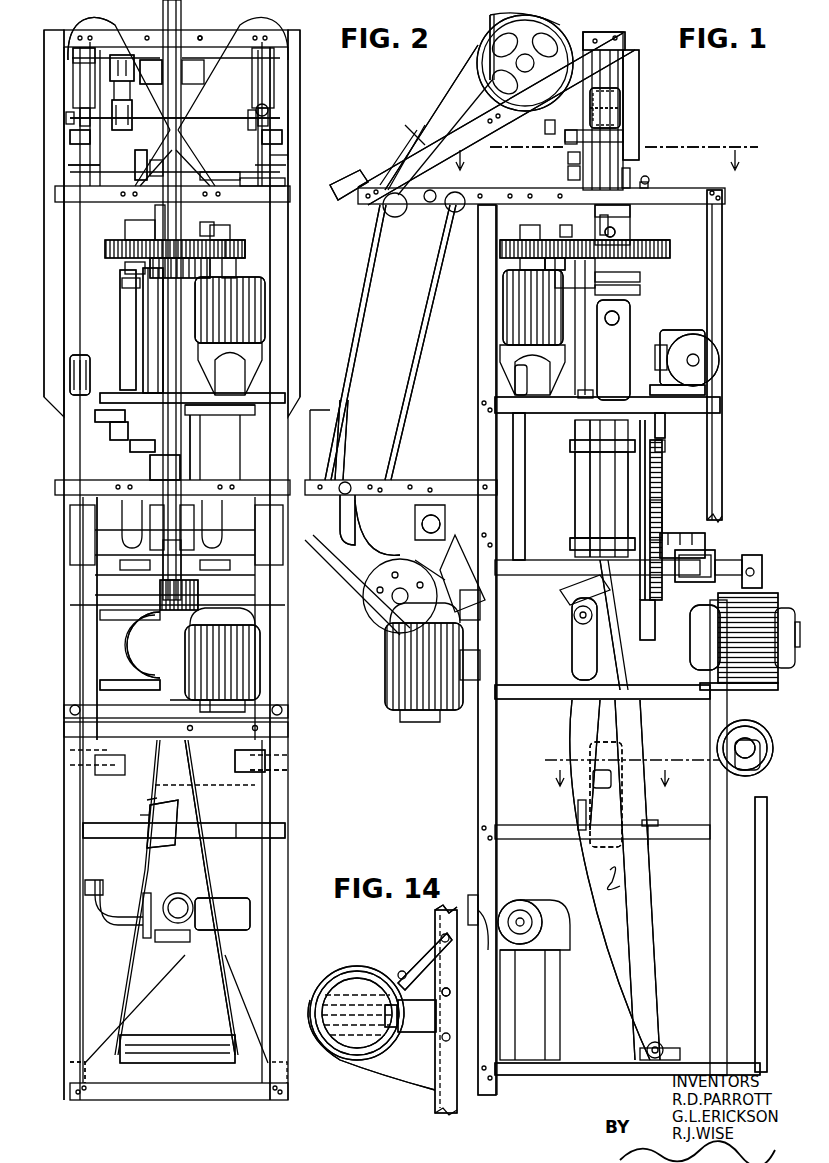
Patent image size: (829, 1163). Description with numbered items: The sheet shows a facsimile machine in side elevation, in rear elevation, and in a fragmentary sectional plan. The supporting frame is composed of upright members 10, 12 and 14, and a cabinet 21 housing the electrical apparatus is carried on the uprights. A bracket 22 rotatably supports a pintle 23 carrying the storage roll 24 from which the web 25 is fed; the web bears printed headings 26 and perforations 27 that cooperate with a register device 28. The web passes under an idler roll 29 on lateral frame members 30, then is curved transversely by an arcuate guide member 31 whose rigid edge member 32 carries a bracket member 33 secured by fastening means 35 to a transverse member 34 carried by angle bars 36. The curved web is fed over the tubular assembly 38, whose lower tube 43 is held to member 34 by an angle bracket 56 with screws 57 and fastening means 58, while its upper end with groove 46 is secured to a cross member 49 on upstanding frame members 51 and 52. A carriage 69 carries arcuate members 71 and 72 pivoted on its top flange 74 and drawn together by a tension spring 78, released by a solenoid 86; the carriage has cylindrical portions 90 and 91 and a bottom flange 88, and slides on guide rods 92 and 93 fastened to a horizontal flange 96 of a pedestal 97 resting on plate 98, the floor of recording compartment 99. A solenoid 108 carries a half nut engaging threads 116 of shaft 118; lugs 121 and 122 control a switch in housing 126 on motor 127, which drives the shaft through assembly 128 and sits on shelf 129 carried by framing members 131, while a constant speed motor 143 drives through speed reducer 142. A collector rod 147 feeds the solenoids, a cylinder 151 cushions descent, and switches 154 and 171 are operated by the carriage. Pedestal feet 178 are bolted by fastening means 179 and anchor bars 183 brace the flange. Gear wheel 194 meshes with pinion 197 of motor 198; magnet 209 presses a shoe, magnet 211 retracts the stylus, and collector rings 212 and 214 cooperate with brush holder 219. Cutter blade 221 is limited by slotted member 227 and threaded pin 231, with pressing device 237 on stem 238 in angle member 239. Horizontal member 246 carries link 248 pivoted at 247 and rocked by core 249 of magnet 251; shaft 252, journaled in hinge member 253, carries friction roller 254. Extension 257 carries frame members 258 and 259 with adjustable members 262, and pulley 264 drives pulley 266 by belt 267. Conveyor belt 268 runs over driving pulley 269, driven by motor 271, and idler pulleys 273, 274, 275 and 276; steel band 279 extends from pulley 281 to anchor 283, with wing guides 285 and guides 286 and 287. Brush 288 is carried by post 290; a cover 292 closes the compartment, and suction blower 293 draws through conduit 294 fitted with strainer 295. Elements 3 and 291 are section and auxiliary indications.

In FIG. 1, the upright member 10 is at (722, 276).
In FIG. 2, the upright member 12 is at (64, 445).
In FIG. 2, the upright member 14 is at (282, 450).
In FIG. 1, the upright member 14 is at (490, 337).
In FIG. 1, the cabinet 21 is at (750, 940).
In FIG. 2, the bracket 22 is at (280, 760).
In FIG. 1, the bracket 22 is at (752, 770).
In FIG. 2, the pintle 23 is at (288, 752).
In FIG. 1, the pintle 23 is at (760, 748).
In FIG. 2, the storage roll 24 is at (225, 790).
In FIG. 1, the storage roll 24 is at (735, 722).
In FIG. 2, the web 25 is at (202, 805).
In FIG. 1, the web 25 is at (635, 950).
In FIG. 14, the web 25 is at (375, 1070).
In FIG. 1, the printed matter 26 is at (582, 770).
In FIG. 1, the perforations 27 is at (605, 875).
In FIG. 1, the register device 28 is at (567, 644).
In FIG. 2, the idler roll 29 is at (110, 1050).
In FIG. 2, the lateral frame members 30 is at (72, 1064).
In FIG. 1, the lateral frame members 30 is at (580, 1075).
In FIG. 2, the arcuate guide member 31 is at (165, 845).
In FIG. 1, the arcuate guide member 31 is at (580, 805).
In FIG. 14, the arcuate guide member 31 is at (345, 967).
In FIG. 14, the edge member 32 is at (400, 965).
In FIG. 2, the bracket member 33 is at (140, 820).
In FIG. 14, the bracket member 33 is at (430, 950).
In FIG. 2, the transverse member 34 is at (238, 838).
In FIG. 1, the transverse member 34 is at (650, 840).
In FIG. 14, the transverse member 34 is at (435, 1102).
In FIG. 2, the fastening means 35 is at (148, 805).
In FIG. 1, the fastening means 35 is at (650, 822).
In FIG. 14, the fastening means 35 is at (440, 933).
In FIG. 2, the angle bars 36 is at (72, 825).
In FIG. 1, the angle bars 36 is at (583, 34).
In FIG. 1, the tubular assembly 38 is at (622, 745).
In FIG. 14, the tubular assembly 38 is at (392, 1060).
In FIG. 14, the encircling tubular member 43 is at (392, 1040).
In FIG. 1, the groove 46 is at (565, 228).
In FIG. 2, the cross member 49 is at (200, 35).
In FIG. 2, the upstanding frame member 51 is at (300, 250).
In FIG. 1, the upstanding frame member 51 is at (640, 80).
In FIG. 2, the upstanding frame member 52 is at (47, 258).
In FIG. 14, the angle shaped bracket 56 is at (428, 1032).
In FIG. 14, the screws 57 is at (388, 1012).
In FIG. 14, the fastening means 58 is at (450, 1037).
In FIG. 1, the carriage 69 is at (578, 495).
In FIG. 1, the arcuate member 71 is at (580, 432).
In FIG. 1, the arcuate member 72 is at (575, 440).
In FIG. 2, the top flange 74 is at (222, 447).
In FIG. 2, the tension spring 78 is at (128, 440).
In FIG. 2, the solenoid 86 is at (135, 460).
In FIG. 1, the bottom flange 88 is at (578, 550).
In FIG. 1, the cylindrical portion 90 is at (588, 514).
In FIG. 1, the cylindrical portion 91 is at (578, 540).
In FIG. 2, the guide rod 92 is at (225, 432).
In FIG. 2, the guide rod 93 is at (128, 392).
In FIG. 1, the guide rod 93 is at (645, 488).
In FIG. 1, the horizontal flange 96 is at (640, 292).
In FIG. 2, the pedestal member 97 is at (143, 330).
In FIG. 1, the plate 98 is at (705, 397).
In FIG. 1, the recording compartment 99 is at (520, 228).
In FIG. 1, the solenoid 108 is at (700, 590).
In FIG. 1, the threads 116 is at (660, 466).
In FIG. 1, the shaft 118 is at (660, 448).
In FIG. 1, the lug 121 is at (720, 560).
In FIG. 1, the lug 122 is at (735, 575).
In FIG. 1, the switch housing 126 is at (762, 572).
In FIG. 2, the motor 127 is at (150, 655).
In FIG. 1, the motor 127 is at (776, 665).
In FIG. 1, the combined bearing and gear assembly 128 is at (660, 670).
In FIG. 2, the shelf 129 is at (148, 685).
In FIG. 1, the shelf 129 is at (765, 690).
In FIG. 1, the framing members 131 is at (550, 692).
In FIG. 1, the speed reducing device 142 is at (665, 355).
In FIG. 1, the constant speed motor 143 is at (710, 340).
In FIG. 1, the collector rod 147 is at (655, 508).
In FIG. 1, the cylinder 151 is at (635, 580).
In FIG. 1, the mechanically operated switch 154 is at (708, 533).
In FIG. 2, the switch 171 is at (105, 432).
In FIG. 1, the switch 171 is at (660, 430).
In FIG. 1, the feet 178 is at (590, 397).
In FIG. 1, the fastening means 179 is at (585, 395).
In FIG. 2, the anchor bars 183 is at (125, 312).
In FIG. 1, the anchor bars 183 is at (635, 308).
In FIG. 2, the gear wheel 194 is at (108, 248).
In FIG. 1, the gear wheel 194 is at (670, 250).
In FIG. 2, the pinion 197 is at (258, 234).
In FIG. 1, the pinion 197 is at (530, 258).
In FIG. 2, the driving motor 198 is at (265, 300).
In FIG. 1, the driving motor 198 is at (503, 305).
In FIG. 1, the magnet 209 is at (620, 318).
In FIG. 1, the magnet 211 is at (565, 245).
In FIG. 2, the collector ring 212 is at (158, 258).
In FIG. 2, the collector ring 214 is at (135, 268).
In FIG. 2, the brush holder 219 is at (135, 283).
In FIG. 1, the brush holder 219 is at (640, 277).
In FIG. 1, the cutter blade 221 is at (628, 215).
In FIG. 1, the slotted member 227 is at (628, 230).
In FIG. 2, the threaded pin 231 is at (210, 228).
In FIG. 1, the pressing device 237 is at (628, 168).
In FIG. 1, the stem 238 is at (645, 178).
In FIG. 1, the angle member 239 is at (650, 186).
In FIG. 2, the horizontal member 246 is at (290, 135).
In FIG. 1, the horizontal member 246 is at (620, 138).
In FIG. 1, the pivot 247 is at (575, 138).
In FIG. 2, the link 248 is at (266, 138).
In FIG. 1, the link 248 is at (545, 126).
In FIG. 1, the core 249 is at (615, 108).
In FIG. 2, the magnet 251 is at (258, 110).
In FIG. 1, the magnet 251 is at (622, 96).
In FIG. 2, the shaft 252 is at (250, 122).
In FIG. 2, the hinge member 253 is at (68, 125).
In FIG. 2, the friction roller 254 is at (190, 118).
In FIG. 1, the extension 257 is at (372, 205).
In FIG. 2, the frame member 258 is at (285, 160).
In FIG. 1, the frame member 258 is at (465, 128).
In FIG. 2, the frame member 259 is at (70, 162).
In FIG. 2, the adjustably mounted members 262 is at (75, 48).
In FIG. 2, the pulley 264 is at (112, 72).
In FIG. 2, the pulley 266 is at (68, 120).
In FIG. 2, the belt 267 is at (112, 112).
In FIG. 2, the flexible belt 268 is at (163, 568).
In FIG. 1, the flexible belt 268 is at (400, 300).
In FIG. 2, the driving pulley 269 is at (198, 592).
In FIG. 2, the motor 271 is at (262, 628).
In FIG. 1, the motor 271 is at (388, 660).
In FIG. 1, the idler pulley 273 is at (392, 495).
In FIG. 1, the idler pulley 274 is at (455, 205).
In FIG. 1, the idler pulley 275 is at (345, 480).
In FIG. 1, the idler pulley 276 is at (395, 210).
In FIG. 2, the flexible steel band 279 is at (158, 222).
In FIG. 1, the flexible steel band 279 is at (365, 300).
In FIG. 2, the pulley 281 is at (142, 65).
In FIG. 1, the pulley 281 is at (483, 90).
In FIG. 1, the anchor 283 is at (335, 535).
In FIG. 2, the wing-shaped guide members 285 is at (92, 22).
In FIG. 1, the wing-shaped guide members 285 is at (490, 25).
In FIG. 2, the guide member 286 is at (208, 480).
In FIG. 1, the guide member 286 is at (340, 425).
In FIG. 1, the guide member 287 is at (348, 425).
In FIG. 1, the metallic brush 288 is at (572, 160).
In FIG. 2, the post 290 is at (138, 160).
In FIG. 1, the post 290 is at (572, 174).
In FIG. 2, the bar 291 is at (215, 178).
In FIG. 2, the two-part cover 292 is at (285, 186).
In FIG. 2, the suction blower 293 is at (250, 912).
In FIG. 1, the suction blower 293 is at (548, 930).
In FIG. 2, the conduit 294 is at (97, 620).
In FIG. 1, the conduit 294 is at (526, 480).
In FIG. 2, the strainer 295 is at (88, 365).
In FIG. 1, the strainer 295 is at (515, 378).
In FIG. 1, the section line 3 is at (602, 146).